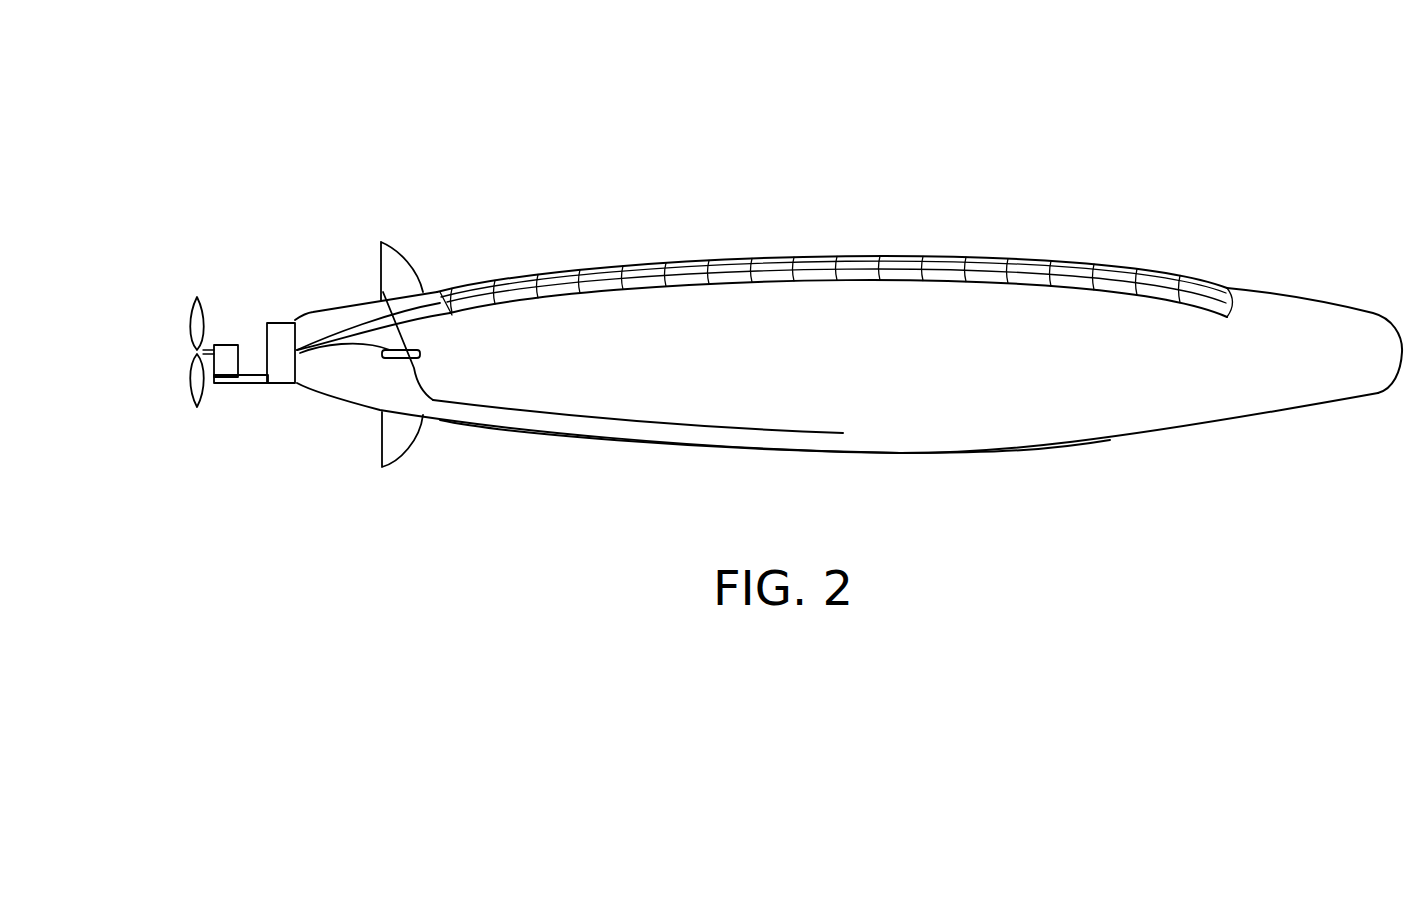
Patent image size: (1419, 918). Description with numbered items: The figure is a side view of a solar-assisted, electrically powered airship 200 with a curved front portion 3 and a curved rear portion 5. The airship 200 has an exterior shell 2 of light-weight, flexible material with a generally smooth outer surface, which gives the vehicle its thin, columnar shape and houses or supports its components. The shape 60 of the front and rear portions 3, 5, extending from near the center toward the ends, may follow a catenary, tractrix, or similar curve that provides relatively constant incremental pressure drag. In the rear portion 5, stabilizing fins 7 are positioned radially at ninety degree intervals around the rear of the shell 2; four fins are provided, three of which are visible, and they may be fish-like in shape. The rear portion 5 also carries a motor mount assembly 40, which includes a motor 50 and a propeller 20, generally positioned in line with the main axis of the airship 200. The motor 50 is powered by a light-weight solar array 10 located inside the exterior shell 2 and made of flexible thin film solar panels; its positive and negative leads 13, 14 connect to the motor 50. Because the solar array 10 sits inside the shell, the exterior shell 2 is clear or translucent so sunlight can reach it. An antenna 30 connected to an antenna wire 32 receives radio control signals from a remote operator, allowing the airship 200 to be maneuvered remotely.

The solar-assisted, electrically powered airship 200 is at (810, 147).
The rear portion 5 is at (332, 157).
The front portion 3 is at (1303, 250).
The exterior shell 2 is at (1285, 400).
The solar array 10 is at (847, 260).
The positive lead 13 is at (437, 288).
The negative lead 14 is at (440, 317).
The stabilizing fins 7 is at (400, 260).
The antenna wire 32 is at (417, 373).
The antenna 30 is at (710, 430).
The shape of the front and rear portions 60 is at (483, 427).
The propeller 20 is at (192, 313).
The motor 50 is at (233, 347).
The motor mount assembly 40 is at (278, 387).